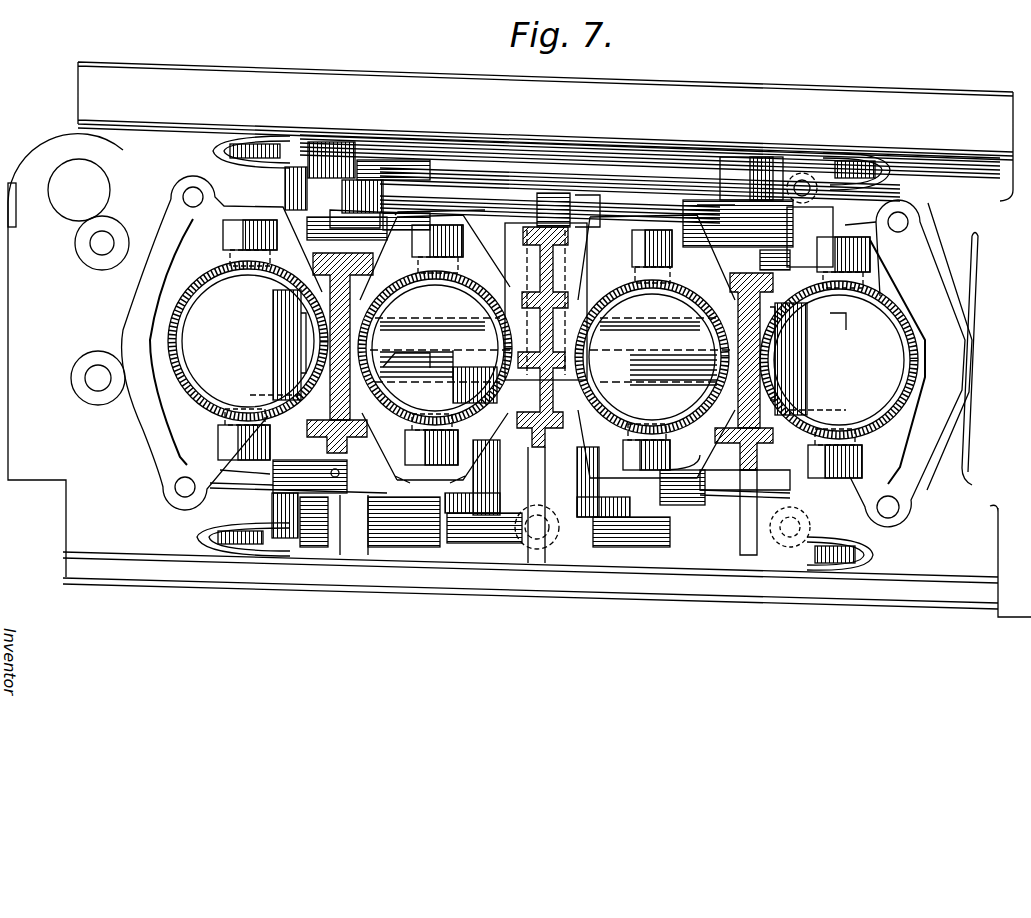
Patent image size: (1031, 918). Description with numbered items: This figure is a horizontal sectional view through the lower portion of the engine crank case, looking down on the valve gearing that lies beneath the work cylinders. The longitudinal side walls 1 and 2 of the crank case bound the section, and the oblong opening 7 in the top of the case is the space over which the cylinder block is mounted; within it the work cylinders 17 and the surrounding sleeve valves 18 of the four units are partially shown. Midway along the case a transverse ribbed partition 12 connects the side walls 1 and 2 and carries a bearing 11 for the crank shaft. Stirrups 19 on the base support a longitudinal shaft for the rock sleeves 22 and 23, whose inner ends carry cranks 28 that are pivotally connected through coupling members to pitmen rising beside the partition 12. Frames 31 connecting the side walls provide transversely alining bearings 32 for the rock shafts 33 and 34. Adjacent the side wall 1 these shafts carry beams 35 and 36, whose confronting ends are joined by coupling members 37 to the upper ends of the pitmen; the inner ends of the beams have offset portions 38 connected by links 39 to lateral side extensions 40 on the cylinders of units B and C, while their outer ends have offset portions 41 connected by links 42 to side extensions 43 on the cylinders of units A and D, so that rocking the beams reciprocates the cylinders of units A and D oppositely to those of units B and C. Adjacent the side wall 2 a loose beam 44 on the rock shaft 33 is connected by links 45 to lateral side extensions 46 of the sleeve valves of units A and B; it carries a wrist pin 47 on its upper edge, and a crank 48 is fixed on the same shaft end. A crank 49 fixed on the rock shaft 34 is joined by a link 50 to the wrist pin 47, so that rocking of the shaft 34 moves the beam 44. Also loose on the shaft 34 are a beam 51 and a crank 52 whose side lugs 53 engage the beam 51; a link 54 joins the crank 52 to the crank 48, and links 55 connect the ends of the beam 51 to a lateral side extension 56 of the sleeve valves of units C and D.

The longitudinal side wall 1 is at (568, 575).
The longitudinal side wall 2 is at (530, 140).
The oblong opening 7 is at (163, 438).
The bearing 11 is at (513, 277).
The transverse ribbed partition 12 is at (607, 185).
The work cylinders 17 is at (908, 357).
The sleeve valves 18 is at (635, 393).
The stirrups 19 is at (808, 330).
The rock sleeve 22 is at (433, 347).
The rock sleeve 23 is at (685, 345).
The cranks 28 is at (575, 520).
The frames 31 is at (808, 370).
The bearings 32 is at (817, 315).
The rock shaft 33 is at (285, 380).
The rock shaft 34 is at (807, 397).
The beam 35 is at (388, 480).
The beam 36 is at (760, 493).
The coupling members 37 is at (577, 447).
The offset portions 38 is at (700, 473).
The links 39 is at (645, 433).
The lateral side extensions 40 is at (713, 440).
The offset portions 41 is at (828, 487).
The links 42 is at (833, 470).
The side extensions 43 is at (870, 453).
The loose beam 44 is at (403, 210).
The links 45 is at (245, 233).
The lateral side extensions 46 is at (592, 260).
The wrist pin 47 is at (322, 227).
The crank 48 is at (340, 227).
The crank 49 is at (740, 220).
The link 50 is at (478, 207).
The beam 51 is at (840, 253).
The crank 52 is at (793, 240).
The side lugs 53 is at (703, 207).
The link 54 is at (637, 180).
The links 55 is at (862, 213).
The lateral side extension 56 is at (877, 283).